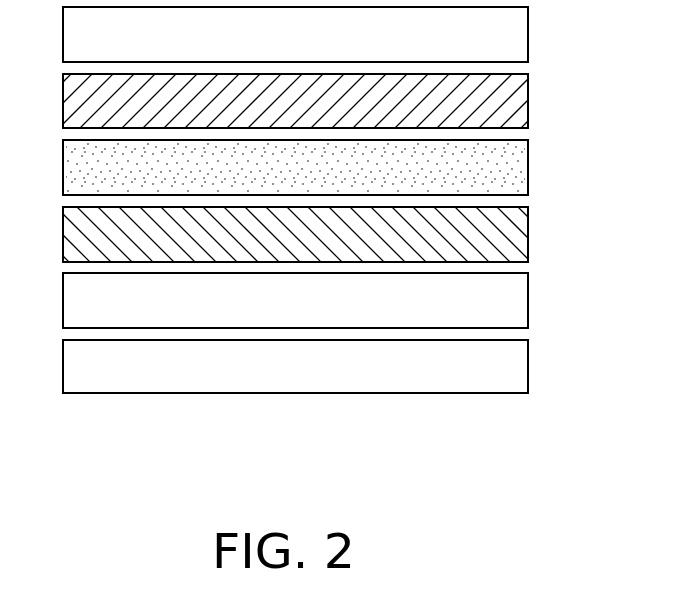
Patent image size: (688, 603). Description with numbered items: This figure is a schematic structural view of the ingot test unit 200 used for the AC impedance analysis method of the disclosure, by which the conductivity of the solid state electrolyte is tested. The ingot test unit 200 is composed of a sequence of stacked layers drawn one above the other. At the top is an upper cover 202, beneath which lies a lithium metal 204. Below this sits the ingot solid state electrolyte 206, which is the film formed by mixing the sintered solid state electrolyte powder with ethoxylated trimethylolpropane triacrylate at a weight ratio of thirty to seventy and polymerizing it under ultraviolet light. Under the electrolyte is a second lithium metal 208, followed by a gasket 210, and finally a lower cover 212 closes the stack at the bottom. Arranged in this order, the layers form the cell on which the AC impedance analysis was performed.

The ingot test unit 200 is at (528, 466).
The upper cover 202 is at (528, 33).
The lithium metal 204 is at (528, 99).
The ingot solid state electrolyte 206 is at (528, 167).
The lithium metal 208 is at (528, 232).
The gasket 210 is at (528, 300).
The lower cover 212 is at (528, 365).